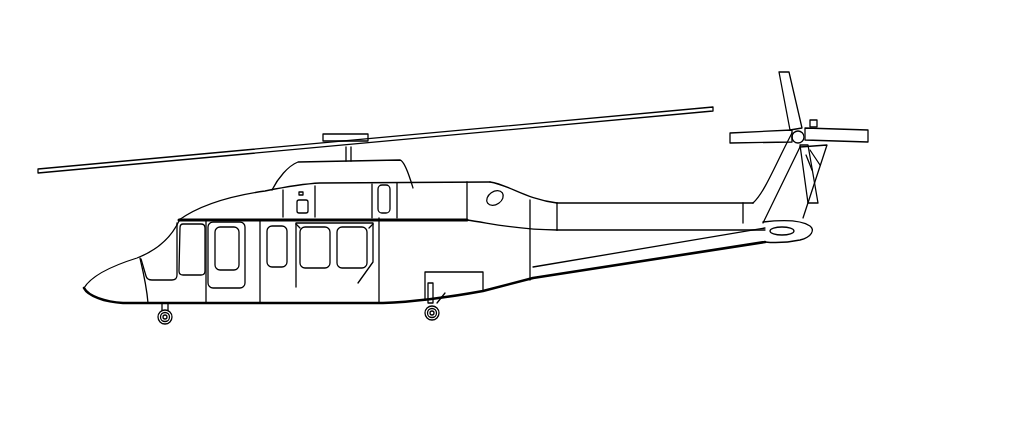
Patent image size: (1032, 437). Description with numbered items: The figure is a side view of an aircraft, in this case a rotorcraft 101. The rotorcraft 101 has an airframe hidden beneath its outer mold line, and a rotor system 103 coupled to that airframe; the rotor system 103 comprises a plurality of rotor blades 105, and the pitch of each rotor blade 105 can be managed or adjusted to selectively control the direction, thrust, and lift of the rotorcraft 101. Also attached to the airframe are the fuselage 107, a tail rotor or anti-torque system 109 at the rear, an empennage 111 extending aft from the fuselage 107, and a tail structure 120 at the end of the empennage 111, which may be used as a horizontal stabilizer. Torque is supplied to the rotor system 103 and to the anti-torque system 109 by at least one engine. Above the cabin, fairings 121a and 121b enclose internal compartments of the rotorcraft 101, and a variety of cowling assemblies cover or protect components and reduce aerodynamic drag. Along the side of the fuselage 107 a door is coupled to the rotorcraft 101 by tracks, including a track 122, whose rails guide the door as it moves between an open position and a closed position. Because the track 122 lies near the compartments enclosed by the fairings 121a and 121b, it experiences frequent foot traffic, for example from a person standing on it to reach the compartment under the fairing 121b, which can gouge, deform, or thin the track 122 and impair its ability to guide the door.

The rotorcraft 101 is at (233, 79).
The rotor system 103 is at (360, 118).
The rotor blade 105 is at (182, 152).
The fuselage 107 is at (272, 303).
The tail rotor or anti-torque system 109 is at (820, 110).
The empennage 111 is at (667, 258).
The tail structure 120 is at (785, 236).
The fairing 121a is at (253, 205).
The fairing 121b is at (328, 195).
The track 122 is at (428, 217).